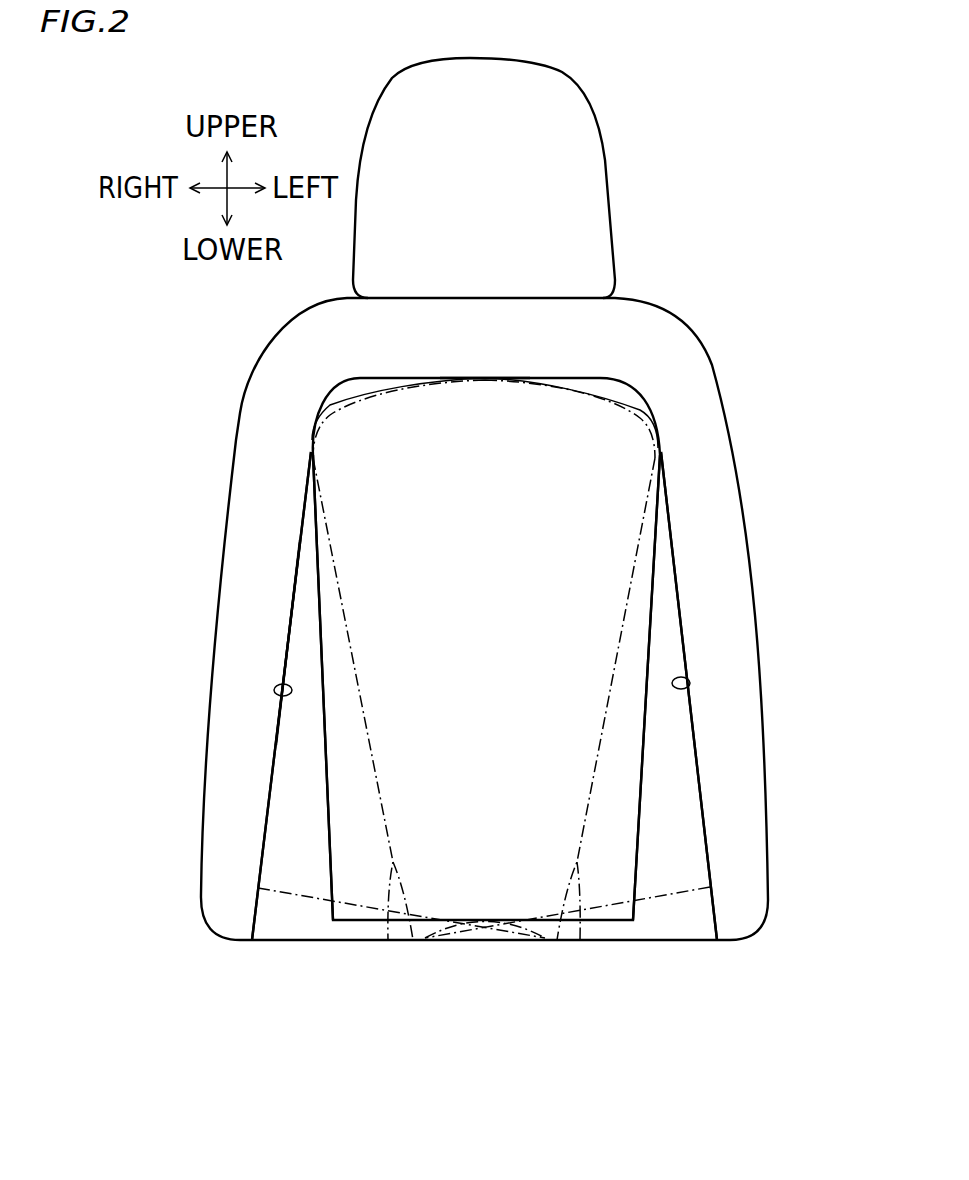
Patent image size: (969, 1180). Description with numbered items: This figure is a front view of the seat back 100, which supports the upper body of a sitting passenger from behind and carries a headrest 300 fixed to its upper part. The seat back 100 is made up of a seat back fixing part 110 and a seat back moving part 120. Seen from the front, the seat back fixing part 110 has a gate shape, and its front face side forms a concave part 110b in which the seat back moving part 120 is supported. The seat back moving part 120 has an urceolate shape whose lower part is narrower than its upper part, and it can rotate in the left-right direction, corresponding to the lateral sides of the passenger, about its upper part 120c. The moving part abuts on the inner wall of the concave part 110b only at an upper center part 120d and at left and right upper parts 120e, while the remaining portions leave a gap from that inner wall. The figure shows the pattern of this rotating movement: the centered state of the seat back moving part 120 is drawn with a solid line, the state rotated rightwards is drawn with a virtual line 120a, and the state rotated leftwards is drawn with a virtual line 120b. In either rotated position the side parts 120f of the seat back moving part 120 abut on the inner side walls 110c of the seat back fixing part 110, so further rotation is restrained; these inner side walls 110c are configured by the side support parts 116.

The seat back 100 is at (484, 628).
The seat back fixing part 110 is at (742, 505).
The concave part 110b is at (298, 745).
The inner side walls 110c is at (274, 690).
The side support parts 116 is at (248, 637).
The seat back moving part 120 is at (640, 836).
The virtual line 120a is at (580, 940).
The virtual line 120b is at (388, 940).
The upper part 120c is at (490, 410).
The upper center part 120d is at (487, 375).
The left and right upper parts 120e is at (310, 453).
The side parts 120f is at (325, 788).
The headrest 300 is at (610, 170).